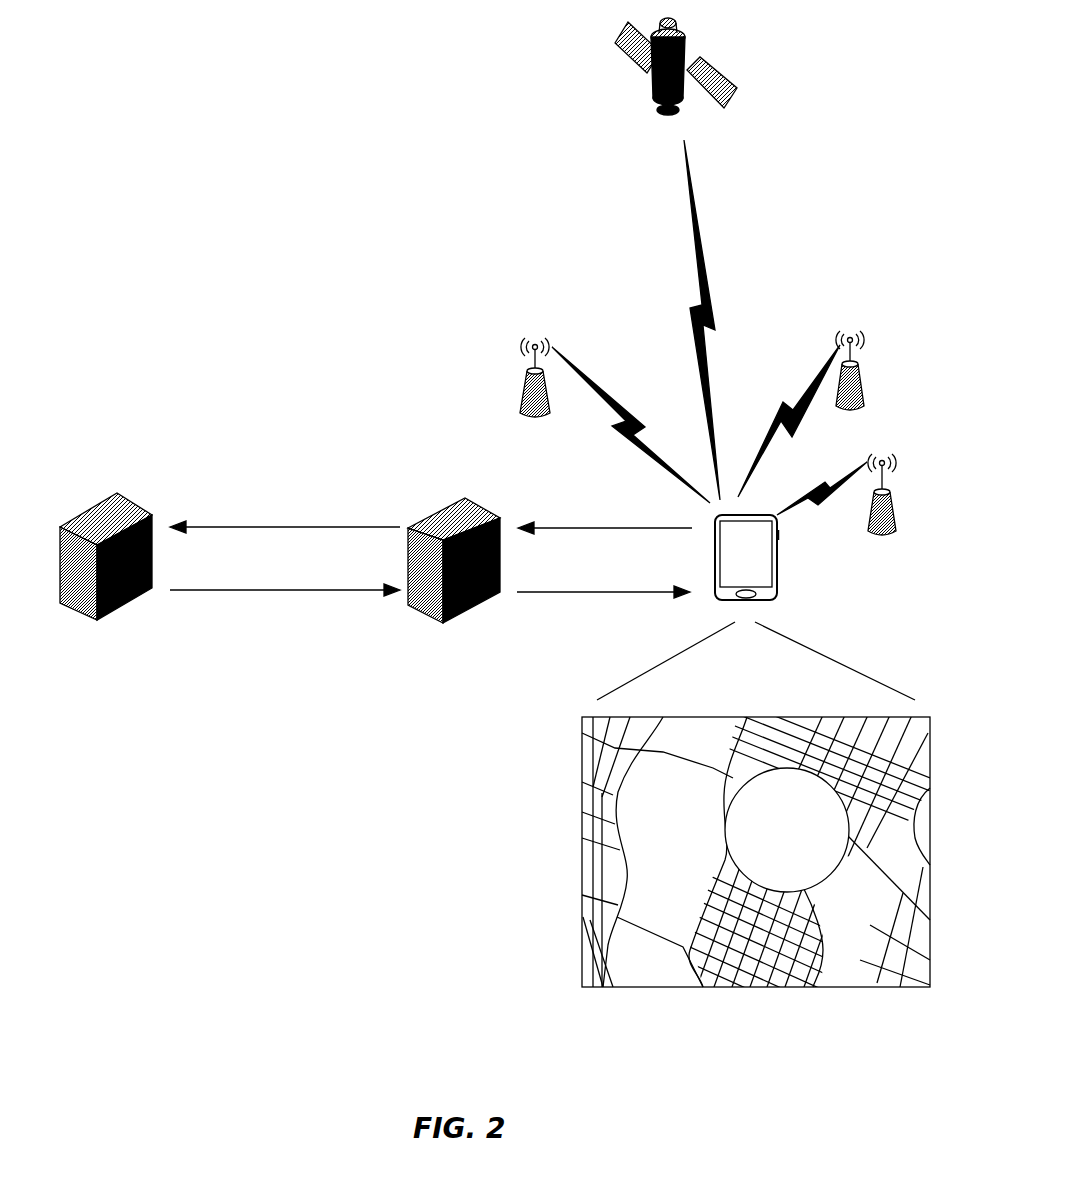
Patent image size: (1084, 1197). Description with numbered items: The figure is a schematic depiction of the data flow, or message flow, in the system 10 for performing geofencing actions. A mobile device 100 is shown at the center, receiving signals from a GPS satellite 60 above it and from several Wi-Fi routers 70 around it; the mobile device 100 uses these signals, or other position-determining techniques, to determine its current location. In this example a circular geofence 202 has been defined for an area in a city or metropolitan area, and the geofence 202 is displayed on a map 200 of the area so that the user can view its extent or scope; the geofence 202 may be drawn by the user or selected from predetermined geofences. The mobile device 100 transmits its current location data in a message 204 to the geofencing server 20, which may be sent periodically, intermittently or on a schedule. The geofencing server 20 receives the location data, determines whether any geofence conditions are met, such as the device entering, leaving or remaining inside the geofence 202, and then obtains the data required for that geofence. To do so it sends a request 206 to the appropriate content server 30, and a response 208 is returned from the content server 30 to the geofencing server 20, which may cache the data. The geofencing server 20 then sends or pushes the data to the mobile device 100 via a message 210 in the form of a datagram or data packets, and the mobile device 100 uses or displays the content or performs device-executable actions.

The system 10 is at (258, 716).
The geofencing server 20 is at (450, 500).
The content server 30 is at (125, 500).
The GPS satellite 60 is at (615, 65).
The Wi-Fi router 70 is at (513, 378).
The mobile device 100 is at (783, 560).
The map 200 is at (756, 880).
The geofence 202 is at (787, 830).
The message 204 is at (605, 507).
The request 206 is at (285, 509).
The response 208 is at (285, 607).
The message 210 is at (603, 610).